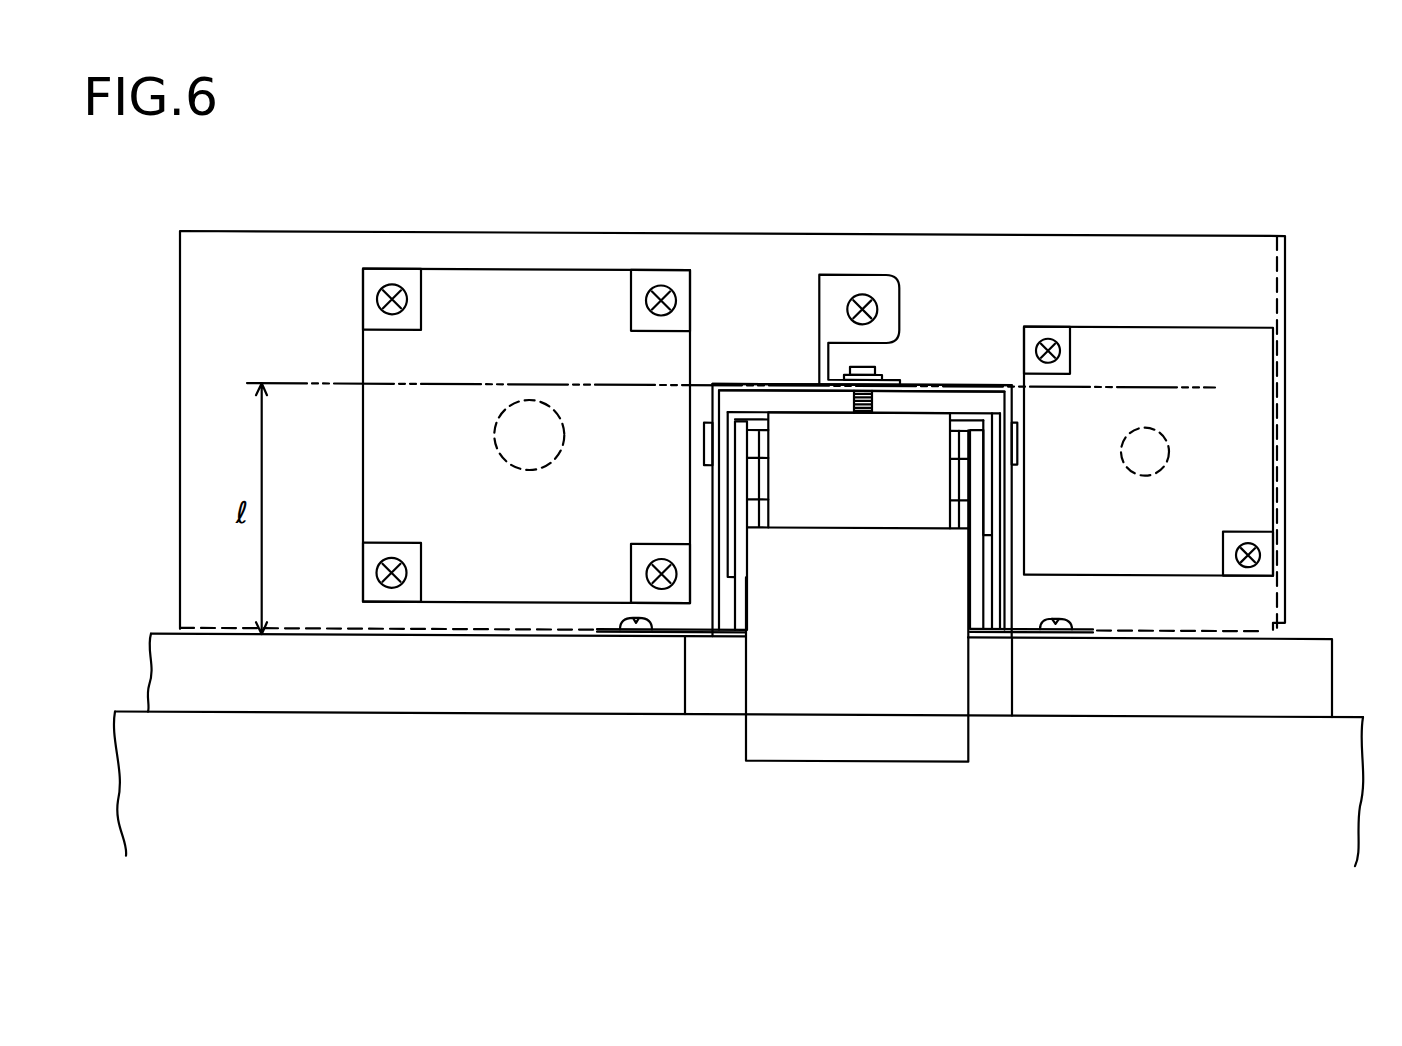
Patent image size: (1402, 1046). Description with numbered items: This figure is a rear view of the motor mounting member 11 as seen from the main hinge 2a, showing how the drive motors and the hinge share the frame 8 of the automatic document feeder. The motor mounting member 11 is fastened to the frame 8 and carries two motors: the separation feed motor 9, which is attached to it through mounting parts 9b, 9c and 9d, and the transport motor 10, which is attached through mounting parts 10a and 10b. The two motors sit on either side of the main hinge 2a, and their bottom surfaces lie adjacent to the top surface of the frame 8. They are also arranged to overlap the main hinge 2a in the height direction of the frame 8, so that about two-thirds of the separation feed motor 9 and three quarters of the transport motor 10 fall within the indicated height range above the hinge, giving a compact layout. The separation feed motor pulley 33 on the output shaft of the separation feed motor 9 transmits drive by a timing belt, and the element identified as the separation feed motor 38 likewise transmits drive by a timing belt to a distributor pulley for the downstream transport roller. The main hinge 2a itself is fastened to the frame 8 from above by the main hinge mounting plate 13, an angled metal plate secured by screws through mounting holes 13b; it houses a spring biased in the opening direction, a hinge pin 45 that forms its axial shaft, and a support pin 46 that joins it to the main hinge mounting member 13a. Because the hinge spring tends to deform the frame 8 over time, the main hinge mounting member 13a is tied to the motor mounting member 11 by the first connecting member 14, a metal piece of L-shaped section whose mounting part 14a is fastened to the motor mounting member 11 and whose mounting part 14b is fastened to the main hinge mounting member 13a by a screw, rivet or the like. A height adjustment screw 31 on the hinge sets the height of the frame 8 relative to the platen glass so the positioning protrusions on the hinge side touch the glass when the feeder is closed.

The main hinge 2a is at (874, 734).
The frame 8 is at (1318, 675).
The separation feed motor 9 is at (453, 587).
The mounting part 9b is at (662, 281).
The mounting part 9c is at (393, 281).
The mounting part 9d is at (666, 558).
The transport motor 10 is at (1258, 355).
The mounting part 10a is at (1250, 531).
The mounting part 10b is at (1048, 337).
The motor mounting member 11 is at (1200, 230).
The main hinge mounting plate 13 is at (1008, 591).
The main hinge mounting member 13a is at (968, 380).
The mounting holes 13b is at (636, 614).
The first connecting member 14 is at (818, 287).
The mounting part 14a is at (864, 291).
The mounting part 14b is at (867, 366).
The height adjustment screw 31 is at (853, 401).
The separation feed motor pulley 33 is at (538, 466).
The separation feed motor 38 is at (1150, 423).
The hinge pin 45 is at (740, 492).
The support pin 46 is at (1018, 437).